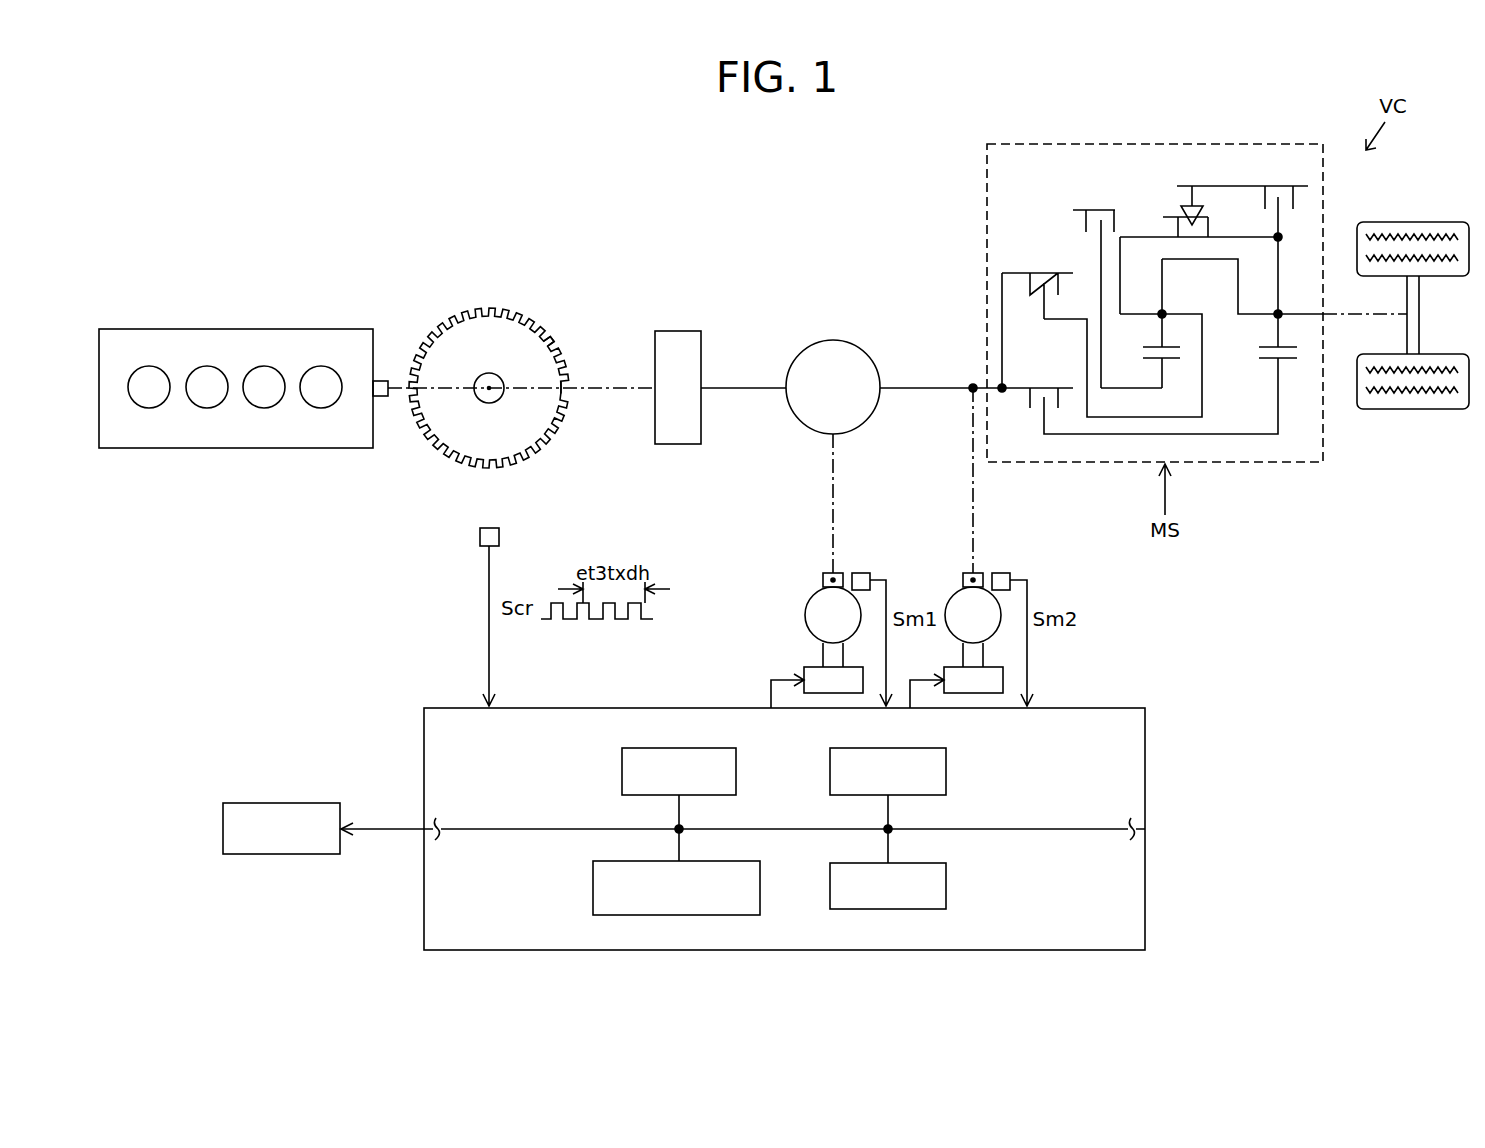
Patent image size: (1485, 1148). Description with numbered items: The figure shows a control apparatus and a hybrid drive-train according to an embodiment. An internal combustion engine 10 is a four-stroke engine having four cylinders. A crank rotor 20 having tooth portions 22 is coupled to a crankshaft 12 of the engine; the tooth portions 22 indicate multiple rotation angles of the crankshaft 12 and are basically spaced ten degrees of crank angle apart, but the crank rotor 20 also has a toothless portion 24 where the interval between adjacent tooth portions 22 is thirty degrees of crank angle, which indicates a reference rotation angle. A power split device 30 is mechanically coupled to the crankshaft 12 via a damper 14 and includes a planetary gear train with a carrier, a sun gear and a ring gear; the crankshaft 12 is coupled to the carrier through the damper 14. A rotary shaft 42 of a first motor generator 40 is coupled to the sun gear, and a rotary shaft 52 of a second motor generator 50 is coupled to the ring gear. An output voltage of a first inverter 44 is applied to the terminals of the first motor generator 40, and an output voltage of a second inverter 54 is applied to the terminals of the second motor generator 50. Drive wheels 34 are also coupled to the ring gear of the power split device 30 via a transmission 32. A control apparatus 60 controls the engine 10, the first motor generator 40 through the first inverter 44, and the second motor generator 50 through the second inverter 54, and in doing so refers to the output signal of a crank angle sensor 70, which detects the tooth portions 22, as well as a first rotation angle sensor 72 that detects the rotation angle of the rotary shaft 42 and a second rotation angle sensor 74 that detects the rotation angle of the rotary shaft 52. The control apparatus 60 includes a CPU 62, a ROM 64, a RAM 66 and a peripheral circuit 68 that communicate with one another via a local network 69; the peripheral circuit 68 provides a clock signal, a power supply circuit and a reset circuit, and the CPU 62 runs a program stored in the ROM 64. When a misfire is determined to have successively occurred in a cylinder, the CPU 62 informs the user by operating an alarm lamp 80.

The internal combustion engine 10 is at (298, 329).
The crankshaft 12 is at (381, 397).
The damper 14 is at (678, 331).
The crank rotor 20 is at (535, 297).
The tooth portions 22 is at (553, 336).
The toothless portion 24 is at (563, 362).
The power split device 30 is at (878, 356).
The transmission 32 is at (1282, 126).
The drive wheels 34 is at (1413, 222).
The first motor generator 40 is at (805, 616).
The rotary shaft 42 is at (823, 580).
The first inverter 44 is at (863, 680).
The second motor generator 50 is at (947, 606).
The rotary shaft 52 is at (973, 573).
The second inverter 54 is at (1003, 680).
The control apparatus 60 is at (1110, 708).
The CPU 62 is at (704, 748).
The ROM 64 is at (914, 748).
The RAM 66 is at (914, 863).
The peripheral circuit 68 is at (704, 861).
The local network 69 is at (934, 829).
The crank angle sensor 70 is at (499, 536).
The first rotation angle sensor 72 is at (862, 573).
The second rotation angle sensor 74 is at (1002, 573).
The alarm lamp 80 is at (309, 803).